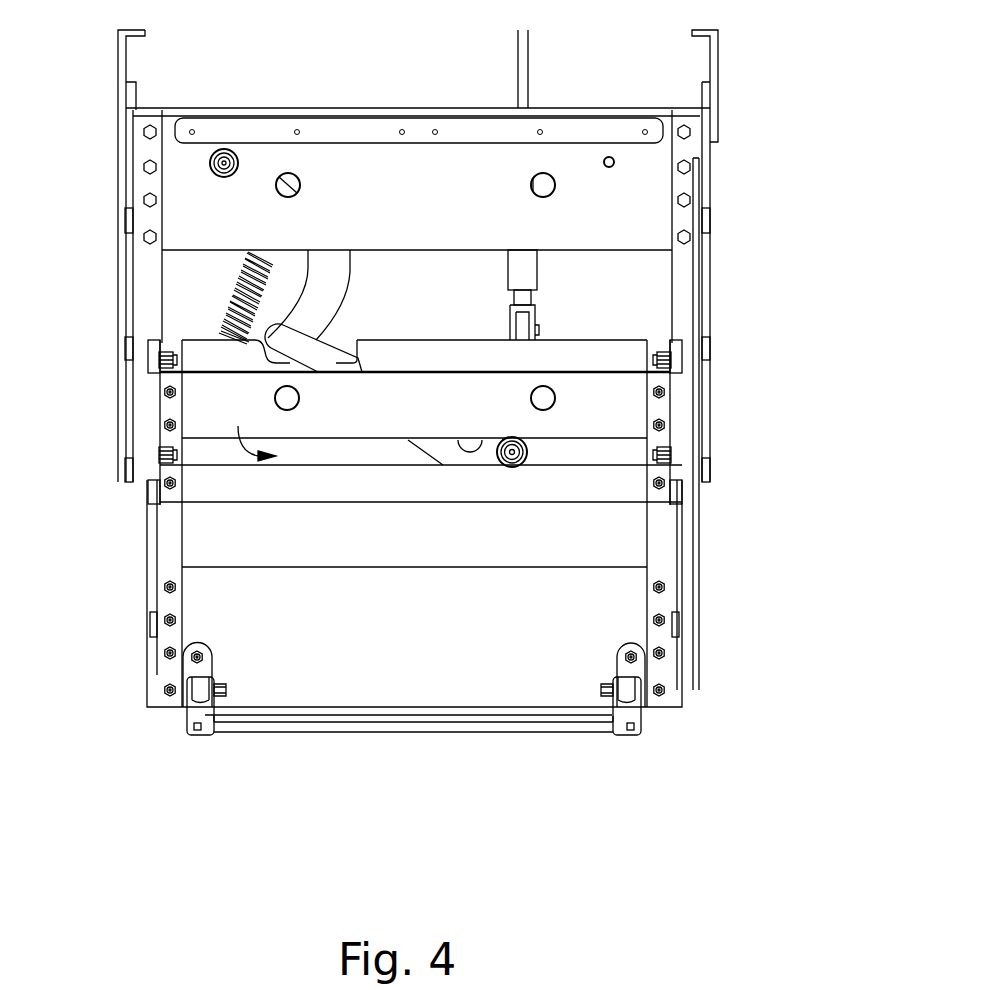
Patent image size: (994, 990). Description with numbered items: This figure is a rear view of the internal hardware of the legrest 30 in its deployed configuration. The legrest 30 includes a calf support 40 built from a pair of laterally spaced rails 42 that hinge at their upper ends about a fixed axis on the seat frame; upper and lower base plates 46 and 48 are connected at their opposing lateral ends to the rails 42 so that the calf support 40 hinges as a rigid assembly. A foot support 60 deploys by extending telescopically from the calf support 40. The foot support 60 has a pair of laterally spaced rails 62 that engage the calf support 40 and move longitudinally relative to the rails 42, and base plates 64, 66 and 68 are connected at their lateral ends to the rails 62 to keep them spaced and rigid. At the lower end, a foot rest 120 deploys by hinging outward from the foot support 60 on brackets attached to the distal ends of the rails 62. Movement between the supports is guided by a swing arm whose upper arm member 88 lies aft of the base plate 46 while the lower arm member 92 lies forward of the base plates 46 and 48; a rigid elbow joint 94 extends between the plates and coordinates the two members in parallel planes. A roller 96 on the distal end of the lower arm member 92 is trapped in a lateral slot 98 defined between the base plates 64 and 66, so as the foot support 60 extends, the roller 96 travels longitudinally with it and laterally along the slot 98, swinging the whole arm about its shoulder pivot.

The legrest 30 is at (762, 100).
The calf support 40 is at (752, 380).
The rails 42 is at (150, 272).
The upper base plate 46 is at (183, 175).
The lower base plate 48 is at (585, 350).
The foot support 60 is at (785, 588).
The rails 62 is at (165, 548).
The base plate 64 is at (628, 400).
The base plate 66 is at (628, 488).
The base plate 68 is at (628, 600).
The upper arm member 88 is at (345, 270).
The lower arm member 92 is at (440, 452).
The rigid elbow joint 94 is at (315, 355).
The roller 96 is at (512, 468).
The lateral slot 98 is at (249, 430).
The foot rest 120 is at (400, 732).